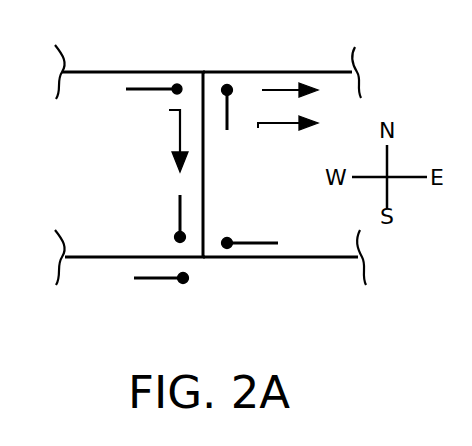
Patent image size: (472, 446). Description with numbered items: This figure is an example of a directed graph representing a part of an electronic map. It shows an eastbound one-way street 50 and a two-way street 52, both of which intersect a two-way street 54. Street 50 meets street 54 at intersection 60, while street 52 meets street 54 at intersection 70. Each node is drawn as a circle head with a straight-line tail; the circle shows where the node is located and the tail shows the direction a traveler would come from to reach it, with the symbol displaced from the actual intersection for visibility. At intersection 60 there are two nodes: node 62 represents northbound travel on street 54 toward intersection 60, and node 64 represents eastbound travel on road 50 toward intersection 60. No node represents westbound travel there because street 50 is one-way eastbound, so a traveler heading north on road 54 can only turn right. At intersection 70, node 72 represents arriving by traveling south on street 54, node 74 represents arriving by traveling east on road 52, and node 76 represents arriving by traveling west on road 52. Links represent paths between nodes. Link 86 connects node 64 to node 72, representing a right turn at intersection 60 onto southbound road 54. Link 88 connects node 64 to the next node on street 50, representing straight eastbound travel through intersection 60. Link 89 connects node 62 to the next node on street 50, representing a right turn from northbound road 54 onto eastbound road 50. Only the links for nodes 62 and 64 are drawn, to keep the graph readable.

The eastbound one-way street 50 is at (284, 72).
The two-way street 52 is at (290, 257).
The two-way street 54 is at (205, 212).
The intersection 60 is at (208, 72).
The node 62 is at (227, 130).
The node 64 is at (140, 89).
The intersection 70 is at (205, 257).
The node 72 is at (180, 214).
The node 74 is at (147, 278).
The node 76 is at (278, 243).
The link 86 is at (178, 133).
The link 88 is at (282, 90).
The link 89 is at (274, 123).